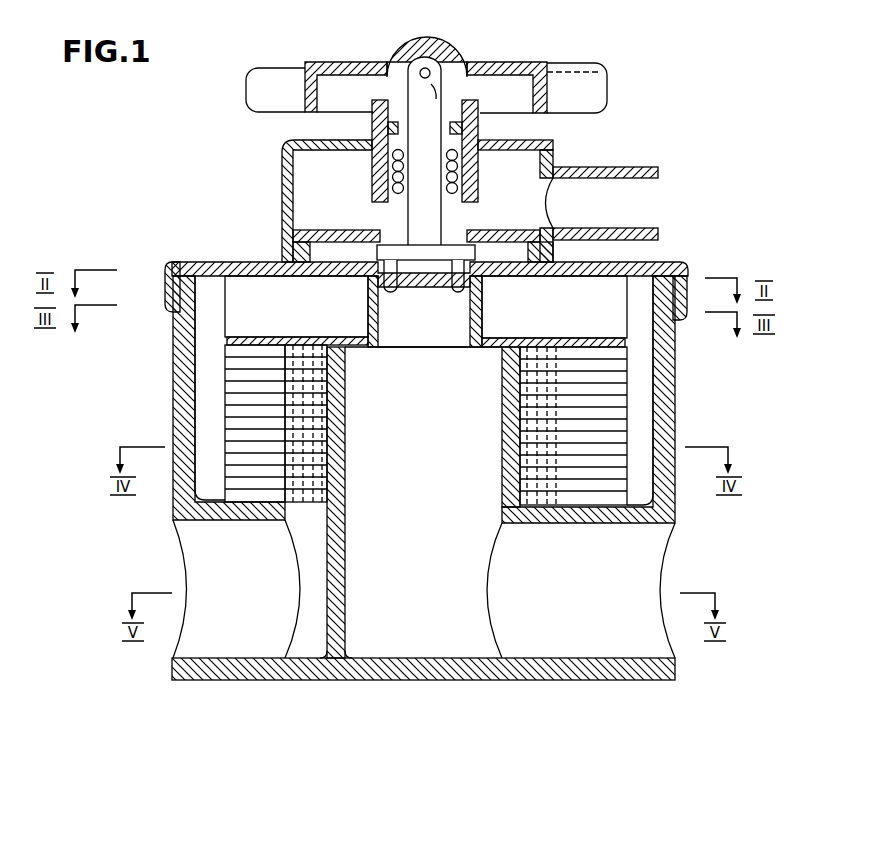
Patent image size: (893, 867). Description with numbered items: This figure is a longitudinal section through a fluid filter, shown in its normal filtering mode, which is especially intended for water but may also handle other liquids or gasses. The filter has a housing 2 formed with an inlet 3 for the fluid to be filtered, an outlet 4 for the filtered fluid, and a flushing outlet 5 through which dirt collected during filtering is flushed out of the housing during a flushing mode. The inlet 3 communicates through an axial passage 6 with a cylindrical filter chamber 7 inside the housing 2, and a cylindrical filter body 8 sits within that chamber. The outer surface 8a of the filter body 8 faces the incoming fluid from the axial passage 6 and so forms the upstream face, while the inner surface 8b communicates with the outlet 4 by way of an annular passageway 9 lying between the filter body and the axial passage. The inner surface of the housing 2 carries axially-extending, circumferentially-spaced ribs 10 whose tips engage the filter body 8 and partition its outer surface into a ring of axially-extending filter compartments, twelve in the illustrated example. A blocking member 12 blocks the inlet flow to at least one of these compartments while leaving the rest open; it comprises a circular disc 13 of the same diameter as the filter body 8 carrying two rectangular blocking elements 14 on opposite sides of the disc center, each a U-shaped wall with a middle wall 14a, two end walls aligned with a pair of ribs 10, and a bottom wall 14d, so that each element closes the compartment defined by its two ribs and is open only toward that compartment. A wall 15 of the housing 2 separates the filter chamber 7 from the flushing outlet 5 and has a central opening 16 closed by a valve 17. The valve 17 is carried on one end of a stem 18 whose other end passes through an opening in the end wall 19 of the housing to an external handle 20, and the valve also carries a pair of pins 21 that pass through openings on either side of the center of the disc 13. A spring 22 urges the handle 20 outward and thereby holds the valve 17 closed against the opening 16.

The housing 2 is at (693, 258).
The inlet 3 is at (660, 641).
The outlet 4 is at (175, 659).
The flushing outlet 5 is at (652, 205).
The axial passage 6 is at (426, 519).
The filter chamber 7 is at (527, 430).
The filter body 8 is at (658, 397).
The outer surface 8a is at (225, 386).
The inner surface 8b is at (338, 412).
The annular passageway 9 is at (338, 460).
The ribs 10 is at (203, 263).
The blocking member 12 is at (185, 288).
The circular disc 13 is at (432, 287).
The blocking elements 14 is at (268, 311).
The middle wall 14a is at (381, 310).
The bottom wall 14d is at (300, 345).
The wall 15 is at (294, 220).
The central opening 16 is at (388, 218).
The valve 17 is at (335, 234).
The stem 18 is at (466, 59).
The end wall 19 is at (555, 140).
The handle 20 is at (540, 62).
The pins 21 is at (478, 265).
The spring 22 is at (372, 160).